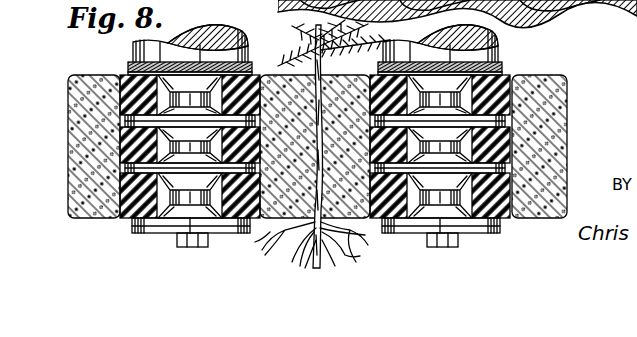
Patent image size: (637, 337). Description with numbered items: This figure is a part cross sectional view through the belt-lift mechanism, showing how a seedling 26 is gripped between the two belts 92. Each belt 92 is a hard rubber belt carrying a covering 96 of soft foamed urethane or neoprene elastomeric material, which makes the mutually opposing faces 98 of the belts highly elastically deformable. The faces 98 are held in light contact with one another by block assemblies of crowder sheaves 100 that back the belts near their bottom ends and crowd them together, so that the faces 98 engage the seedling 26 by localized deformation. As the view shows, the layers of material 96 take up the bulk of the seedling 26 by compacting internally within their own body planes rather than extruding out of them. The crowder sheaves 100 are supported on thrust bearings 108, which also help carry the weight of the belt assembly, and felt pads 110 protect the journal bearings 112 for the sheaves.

The seedling 26 is at (352, 47).
The belt 92 is at (118, 222).
The covering 96 is at (340, 83).
The face 98 is at (68, 87).
The crowder sheave 100 is at (178, 210).
The thrust bearing 108 is at (232, 225).
The felt pad 110 is at (130, 71).
The journal bearing 112 is at (245, 56).